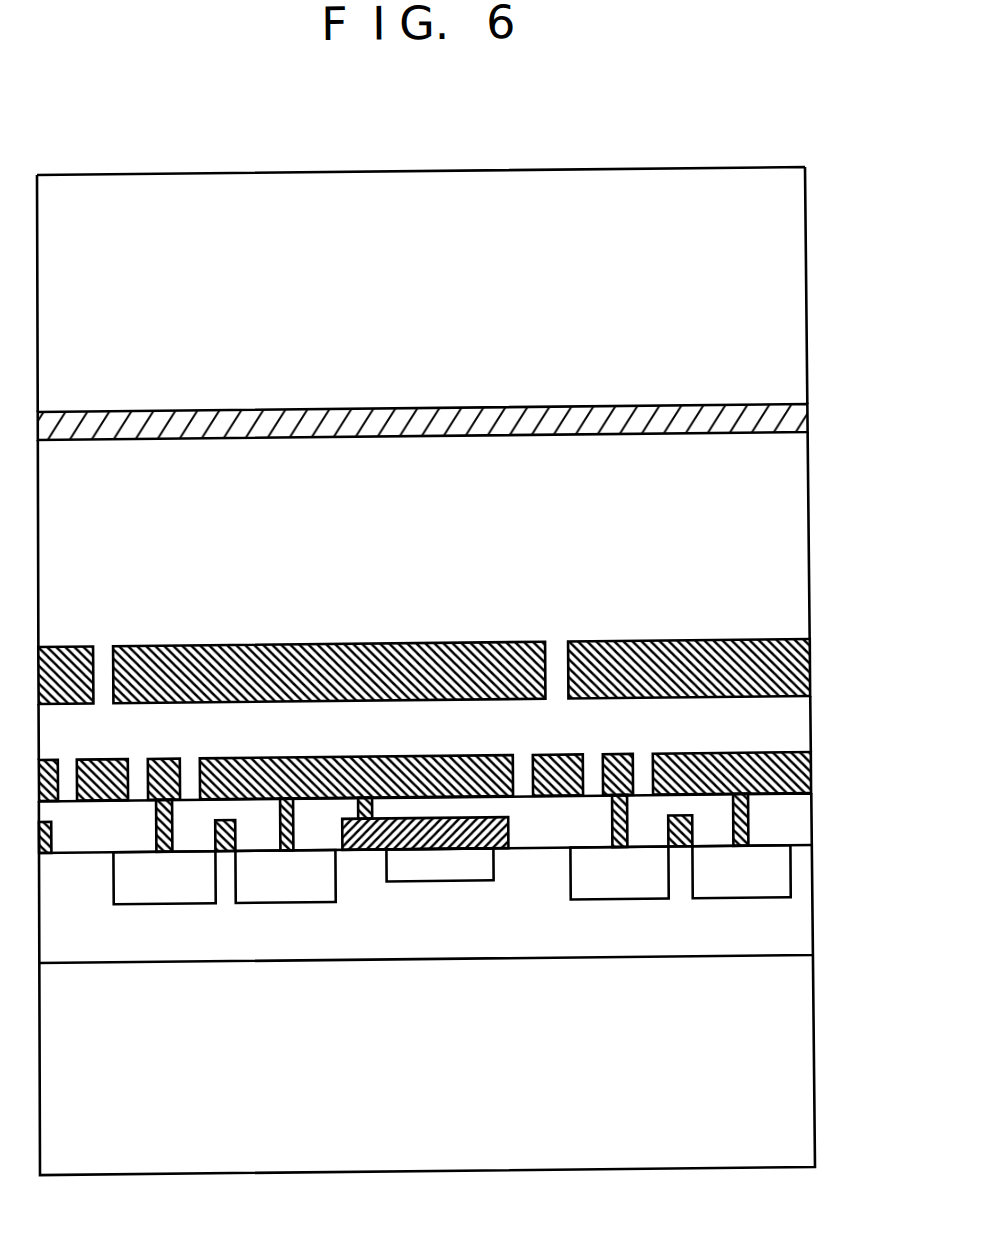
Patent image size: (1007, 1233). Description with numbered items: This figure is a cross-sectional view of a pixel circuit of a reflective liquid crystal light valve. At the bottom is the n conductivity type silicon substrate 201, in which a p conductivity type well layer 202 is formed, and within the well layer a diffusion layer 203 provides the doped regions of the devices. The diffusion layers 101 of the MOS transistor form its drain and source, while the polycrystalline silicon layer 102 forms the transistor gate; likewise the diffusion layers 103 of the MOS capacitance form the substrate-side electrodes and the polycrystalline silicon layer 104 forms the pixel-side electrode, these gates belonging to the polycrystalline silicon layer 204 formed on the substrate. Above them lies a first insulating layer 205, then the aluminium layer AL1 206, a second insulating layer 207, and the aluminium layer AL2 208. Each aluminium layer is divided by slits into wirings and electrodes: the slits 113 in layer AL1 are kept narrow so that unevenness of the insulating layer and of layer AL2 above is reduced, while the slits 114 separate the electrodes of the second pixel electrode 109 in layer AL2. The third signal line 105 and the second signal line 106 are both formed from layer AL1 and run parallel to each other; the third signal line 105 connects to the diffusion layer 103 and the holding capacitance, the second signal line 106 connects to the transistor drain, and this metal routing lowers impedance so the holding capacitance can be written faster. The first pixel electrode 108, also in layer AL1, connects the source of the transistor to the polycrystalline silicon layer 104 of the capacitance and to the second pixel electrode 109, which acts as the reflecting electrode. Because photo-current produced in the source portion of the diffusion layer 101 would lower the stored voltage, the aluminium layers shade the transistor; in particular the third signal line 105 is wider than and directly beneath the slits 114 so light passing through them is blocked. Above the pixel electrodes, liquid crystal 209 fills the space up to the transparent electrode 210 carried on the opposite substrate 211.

The diffusion layer 101 is at (255, 905).
The polycrystalline silicon layer 102 is at (229, 825).
The diffusion layer 103 is at (417, 885).
The polycrystalline silicon layer 104 is at (408, 825).
The third signal line 105 is at (91, 758).
The second signal line 106 is at (159, 758).
The first pixel electrode 108 is at (333, 754).
The second pixel electrode 109 is at (326, 650).
The slit 113 is at (638, 769).
The slit 114 is at (545, 660).
The n conductivity type silicon substrate 201 is at (807, 1048).
The p conductivity type well layer 202 is at (807, 926).
The diffusion layer 203 is at (771, 893).
The polycrystalline silicon layer 204 is at (688, 829).
The first insulating layer 205 is at (807, 798).
The aluminium layer AL1 206 is at (807, 766).
The second insulating layer 207 is at (807, 722).
The aluminium layer AL2 208 is at (807, 672).
The liquid crystal 209 is at (807, 518).
The transparent electrode 210 is at (807, 422).
The opposite substrate 211 is at (807, 302).